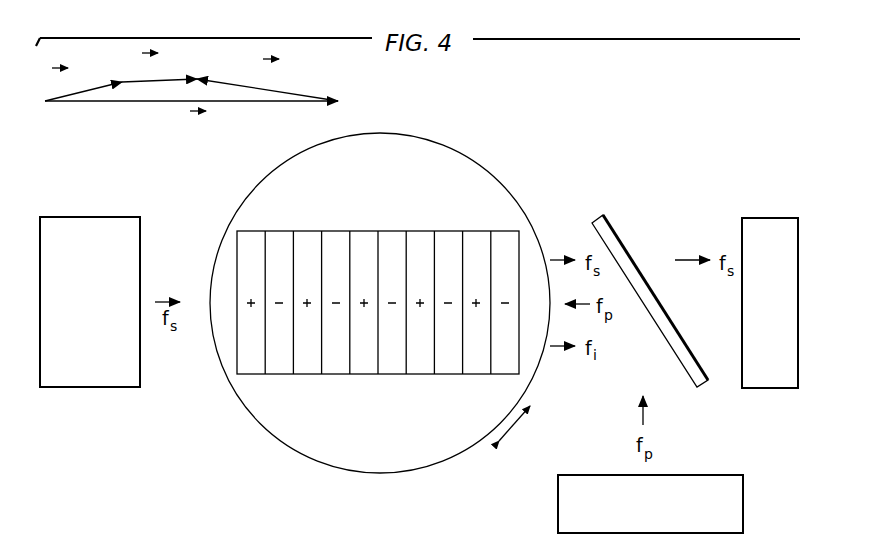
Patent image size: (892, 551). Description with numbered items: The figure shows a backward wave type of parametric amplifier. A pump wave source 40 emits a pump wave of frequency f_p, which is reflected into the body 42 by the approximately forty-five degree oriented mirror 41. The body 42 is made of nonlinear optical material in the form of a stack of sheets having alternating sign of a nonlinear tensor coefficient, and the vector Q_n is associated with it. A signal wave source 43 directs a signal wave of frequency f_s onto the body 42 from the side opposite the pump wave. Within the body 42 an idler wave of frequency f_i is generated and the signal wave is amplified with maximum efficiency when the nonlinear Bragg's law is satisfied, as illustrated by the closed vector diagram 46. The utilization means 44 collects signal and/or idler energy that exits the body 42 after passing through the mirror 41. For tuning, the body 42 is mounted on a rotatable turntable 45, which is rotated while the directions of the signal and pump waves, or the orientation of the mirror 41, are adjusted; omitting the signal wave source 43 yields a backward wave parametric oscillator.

The pump wave source 40 is at (743, 505).
The mirror 41 is at (617, 233).
The body 42 is at (381, 231).
The signal wave source 43 is at (88, 388).
The utilization means 44 is at (772, 388).
The rotatable turntable 45 is at (433, 463).
The closed vector diagram 46 is at (226, 63).